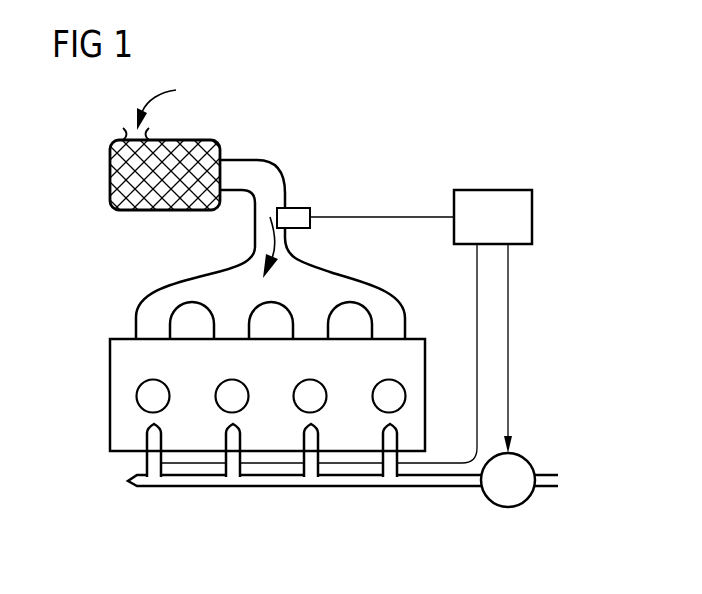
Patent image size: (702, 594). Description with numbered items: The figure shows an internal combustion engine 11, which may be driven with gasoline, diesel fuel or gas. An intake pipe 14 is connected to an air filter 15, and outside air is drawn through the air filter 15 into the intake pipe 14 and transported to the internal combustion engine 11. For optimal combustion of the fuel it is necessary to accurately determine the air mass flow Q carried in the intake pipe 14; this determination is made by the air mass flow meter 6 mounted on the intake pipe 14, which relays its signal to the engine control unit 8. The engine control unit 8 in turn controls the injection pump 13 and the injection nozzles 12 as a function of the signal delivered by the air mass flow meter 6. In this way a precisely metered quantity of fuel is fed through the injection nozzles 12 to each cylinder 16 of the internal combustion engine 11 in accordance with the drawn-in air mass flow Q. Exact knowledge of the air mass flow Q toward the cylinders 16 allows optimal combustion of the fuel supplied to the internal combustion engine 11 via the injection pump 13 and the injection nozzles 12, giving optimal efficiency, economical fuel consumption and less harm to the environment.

The air mass flow meter 6 is at (293, 208).
The engine control unit 8 is at (491, 190).
The internal combustion engine 11 is at (110, 395).
The injection nozzles 12 is at (147, 463).
The injection pump 13 is at (507, 507).
The intake pipe 14 is at (248, 173).
The air filter 15 is at (135, 212).
The cylinder 16 is at (172, 392).
The air mass flow Q is at (272, 243).